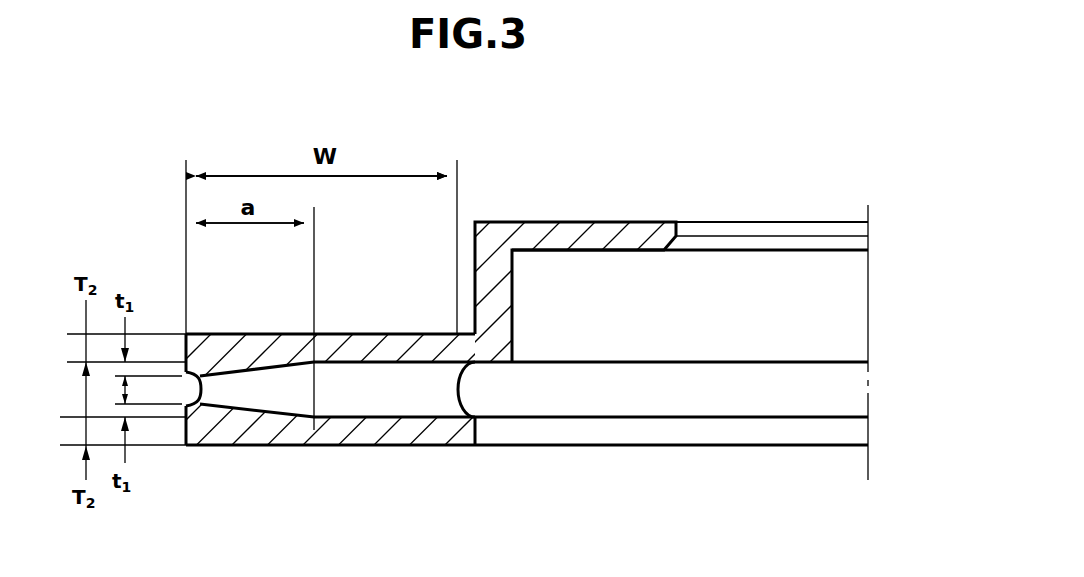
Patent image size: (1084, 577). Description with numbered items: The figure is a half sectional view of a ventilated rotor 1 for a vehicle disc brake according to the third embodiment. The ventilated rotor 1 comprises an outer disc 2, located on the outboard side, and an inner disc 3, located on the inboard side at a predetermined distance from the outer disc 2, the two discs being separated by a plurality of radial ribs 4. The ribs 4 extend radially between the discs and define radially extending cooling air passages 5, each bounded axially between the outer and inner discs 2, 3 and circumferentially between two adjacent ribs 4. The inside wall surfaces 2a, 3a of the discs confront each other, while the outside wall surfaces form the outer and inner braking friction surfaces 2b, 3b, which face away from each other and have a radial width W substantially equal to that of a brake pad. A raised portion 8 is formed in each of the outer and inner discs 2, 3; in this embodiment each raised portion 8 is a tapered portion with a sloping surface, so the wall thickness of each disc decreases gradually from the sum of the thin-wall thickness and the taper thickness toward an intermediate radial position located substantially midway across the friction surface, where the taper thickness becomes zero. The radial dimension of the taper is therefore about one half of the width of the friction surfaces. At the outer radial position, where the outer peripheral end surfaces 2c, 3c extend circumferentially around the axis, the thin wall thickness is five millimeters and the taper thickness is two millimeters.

The ventilated rotor 1 is at (641, 222).
The outer disc 2 is at (497, 369).
The inside wall surface of outer disc 2a is at (371, 368).
The outer braking friction surface 2b is at (356, 333).
The outer peripheral end surface of outer disc 2c is at (182, 338).
The inner disc 3 is at (509, 470).
The inside wall surface of inner disc 3a is at (371, 417).
The inner braking friction surface 3b is at (290, 446).
The outer peripheral end surface of inner disc 3c is at (185, 432).
The radial ribs 4 is at (506, 389).
The cooling air passages 5 is at (445, 391).
The raised portion 8 is at (200, 372).